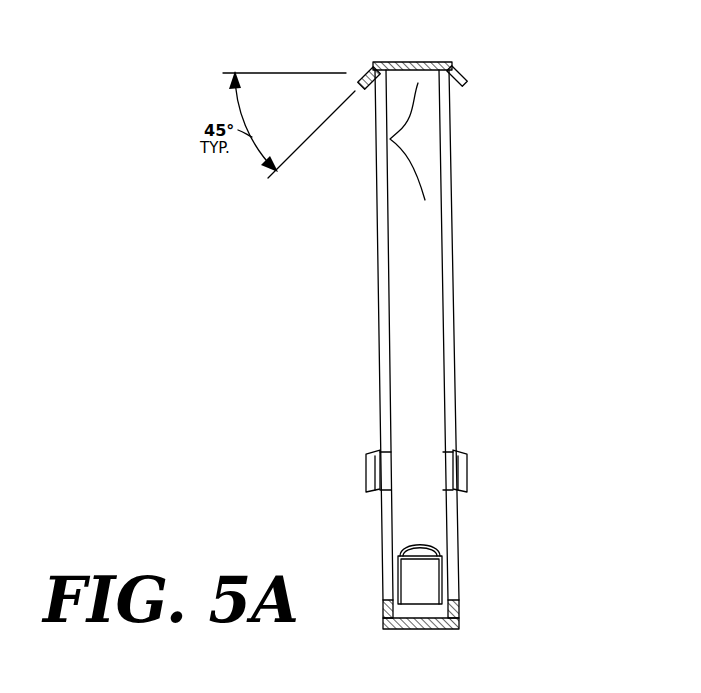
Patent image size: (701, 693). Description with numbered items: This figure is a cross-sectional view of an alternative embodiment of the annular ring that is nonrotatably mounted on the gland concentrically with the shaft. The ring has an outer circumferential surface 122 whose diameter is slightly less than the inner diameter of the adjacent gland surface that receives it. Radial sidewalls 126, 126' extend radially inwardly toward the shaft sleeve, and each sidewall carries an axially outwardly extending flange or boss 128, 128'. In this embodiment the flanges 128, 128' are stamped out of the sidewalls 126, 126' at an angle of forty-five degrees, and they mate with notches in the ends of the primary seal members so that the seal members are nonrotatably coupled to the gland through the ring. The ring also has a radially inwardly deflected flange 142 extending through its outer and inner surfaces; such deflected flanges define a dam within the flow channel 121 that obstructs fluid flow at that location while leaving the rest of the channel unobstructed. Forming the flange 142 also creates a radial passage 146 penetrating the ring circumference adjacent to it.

The flow channel 121 is at (390, 139).
The outer circumferential surface 122 is at (418, 62).
The radial sidewall 126 is at (357, 335).
The radial sidewall 126' is at (491, 335).
The flange 128 is at (335, 279).
The flange 128' is at (500, 278).
The radially inwardly deflected flange 142 is at (428, 582).
The radial passage 146 is at (412, 549).